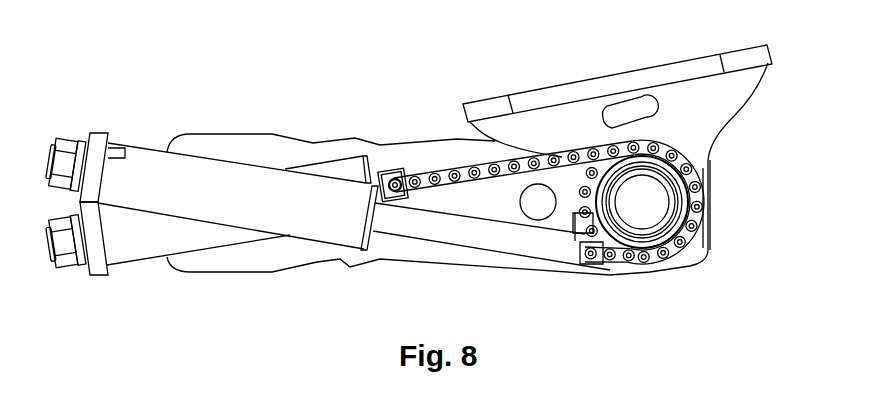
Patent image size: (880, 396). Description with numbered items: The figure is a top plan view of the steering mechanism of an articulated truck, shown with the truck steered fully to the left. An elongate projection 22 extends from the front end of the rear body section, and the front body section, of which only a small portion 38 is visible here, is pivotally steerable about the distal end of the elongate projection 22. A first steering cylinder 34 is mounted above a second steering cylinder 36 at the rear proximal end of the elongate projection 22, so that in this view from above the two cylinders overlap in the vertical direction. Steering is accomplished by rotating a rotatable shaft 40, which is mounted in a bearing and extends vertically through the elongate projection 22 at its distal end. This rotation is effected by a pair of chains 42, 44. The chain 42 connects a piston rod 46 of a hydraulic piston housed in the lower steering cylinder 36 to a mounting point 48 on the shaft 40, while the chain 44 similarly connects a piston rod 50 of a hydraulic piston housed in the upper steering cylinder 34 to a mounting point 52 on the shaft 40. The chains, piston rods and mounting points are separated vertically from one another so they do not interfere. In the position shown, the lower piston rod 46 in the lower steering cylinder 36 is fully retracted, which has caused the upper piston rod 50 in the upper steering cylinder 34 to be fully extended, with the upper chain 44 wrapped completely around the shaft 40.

The elongate projection 22 is at (347, 260).
The first steering cylinder 34 is at (193, 178).
The second steering cylinder 36 is at (145, 242).
The portion of the front body section 38 is at (693, 95).
The rotatable shaft 40 is at (640, 220).
The chain 42 is at (435, 180).
The chain 44 is at (580, 193).
The piston rod 46 is at (378, 182).
The mounting point 48 is at (703, 185).
The piston rod 50 is at (457, 230).
The mounting point 52 is at (577, 218).